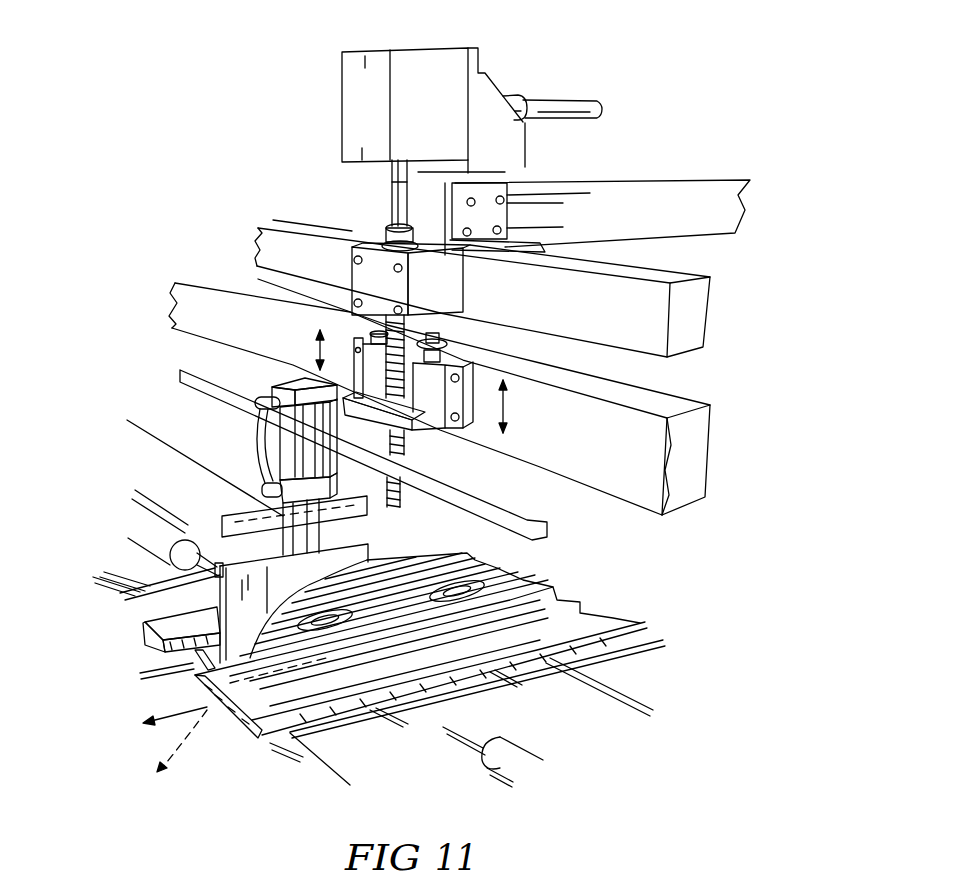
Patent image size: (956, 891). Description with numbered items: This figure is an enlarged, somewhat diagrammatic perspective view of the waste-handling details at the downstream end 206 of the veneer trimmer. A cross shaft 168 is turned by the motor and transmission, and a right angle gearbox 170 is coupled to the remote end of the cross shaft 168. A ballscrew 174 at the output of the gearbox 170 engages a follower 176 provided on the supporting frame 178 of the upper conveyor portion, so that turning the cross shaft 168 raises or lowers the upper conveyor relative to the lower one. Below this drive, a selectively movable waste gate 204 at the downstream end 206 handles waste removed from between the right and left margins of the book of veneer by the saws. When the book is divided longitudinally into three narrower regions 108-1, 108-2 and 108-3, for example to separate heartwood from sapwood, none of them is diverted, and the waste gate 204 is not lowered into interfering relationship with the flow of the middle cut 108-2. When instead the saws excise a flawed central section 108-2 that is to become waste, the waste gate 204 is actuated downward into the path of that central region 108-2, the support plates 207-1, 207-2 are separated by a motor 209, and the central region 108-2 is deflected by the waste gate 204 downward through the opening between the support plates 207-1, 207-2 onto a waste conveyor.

The right angle gearbox 170 is at (432, 70).
The cross shaft 168 is at (573, 100).
The downstream end of trimmer 206 is at (168, 206).
The ballscrew 174 is at (258, 279).
The follower 176 is at (418, 382).
The supporting frame 178 is at (600, 438).
The motor 209 is at (152, 520).
The support plate 207-1 is at (160, 577).
The support plate 207-2 is at (597, 682).
The waste gate 204 is at (390, 551).
The first narrower region of book 108-1 is at (143, 645).
The middle cut of book 108-2 is at (528, 577).
The third narrower region of book 108-3 is at (240, 747).